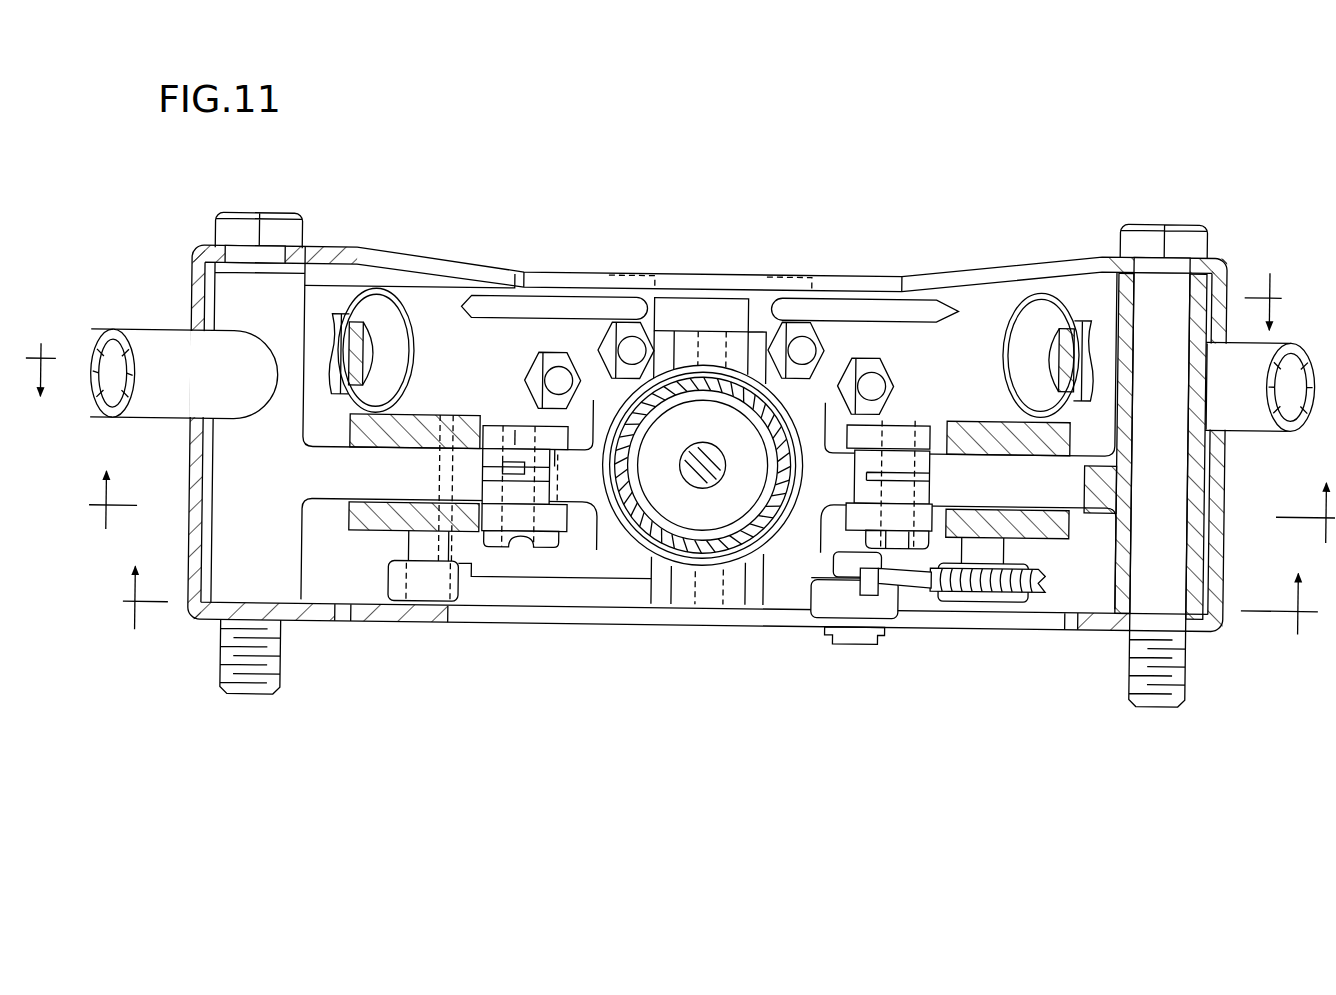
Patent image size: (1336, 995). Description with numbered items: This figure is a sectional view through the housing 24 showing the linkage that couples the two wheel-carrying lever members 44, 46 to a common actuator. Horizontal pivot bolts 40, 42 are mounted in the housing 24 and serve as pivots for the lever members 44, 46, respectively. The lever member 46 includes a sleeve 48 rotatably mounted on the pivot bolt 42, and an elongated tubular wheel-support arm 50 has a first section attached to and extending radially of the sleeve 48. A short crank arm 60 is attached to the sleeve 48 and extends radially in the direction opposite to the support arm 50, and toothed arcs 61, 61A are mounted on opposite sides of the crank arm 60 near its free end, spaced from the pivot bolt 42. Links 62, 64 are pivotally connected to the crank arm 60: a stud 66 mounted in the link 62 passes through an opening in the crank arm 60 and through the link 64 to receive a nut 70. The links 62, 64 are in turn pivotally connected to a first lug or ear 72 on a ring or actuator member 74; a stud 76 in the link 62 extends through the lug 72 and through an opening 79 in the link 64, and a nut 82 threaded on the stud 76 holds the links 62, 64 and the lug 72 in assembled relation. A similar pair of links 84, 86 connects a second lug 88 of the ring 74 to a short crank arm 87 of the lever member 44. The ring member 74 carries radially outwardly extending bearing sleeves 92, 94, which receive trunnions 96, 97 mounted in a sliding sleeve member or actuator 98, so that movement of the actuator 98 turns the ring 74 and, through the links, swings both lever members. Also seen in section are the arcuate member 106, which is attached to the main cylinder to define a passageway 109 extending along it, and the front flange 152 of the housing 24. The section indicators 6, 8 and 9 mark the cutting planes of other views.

The housing 24 is at (590, 622).
The horizontal pivot bolt 40 is at (1166, 212).
The horizontal pivot bolt 42 is at (277, 213).
The lever member 44 is at (1266, 336).
The lever member 46 is at (140, 323).
The sleeve 48 is at (235, 472).
The elongated tubular wheel-support arm 50 is at (176, 350).
The short crank arm 60 is at (340, 490).
The toothed arc 61 is at (483, 498).
The toothed arc 61A is at (478, 450).
The link 62 is at (485, 436).
The link 64 is at (545, 528).
The stud 66 is at (505, 425).
The nut 70 is at (522, 545).
The first lug or ear 72 is at (523, 452).
The ring or actuator member 74 is at (733, 473).
The stud 76 is at (540, 462).
The opening 79 is at (510, 536).
The nut 82 is at (540, 545).
The link 84 is at (908, 434).
The link 86 is at (930, 506).
The short crank arm 87 is at (1070, 490).
The second lug 88 is at (920, 462).
The bearing sleeve 92 is at (745, 620).
The bearing sleeve 94 is at (666, 335).
The trunnion 96 is at (658, 602).
The trunnion 97 is at (750, 325).
The sliding sleeve member or actuator 98 is at (622, 497).
The arcuate member 106 is at (840, 362).
The passageway 109 is at (790, 466).
The front flange 152 is at (845, 283).
The section line 6- 6 is at (653, 339).
The section line 8- 8 is at (712, 489).
The section line 9- 9 is at (721, 585).